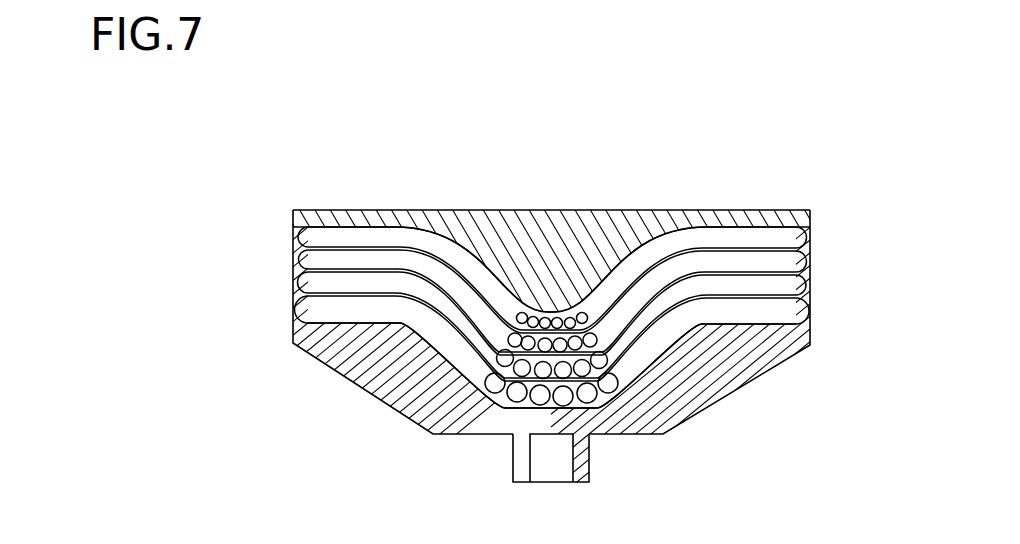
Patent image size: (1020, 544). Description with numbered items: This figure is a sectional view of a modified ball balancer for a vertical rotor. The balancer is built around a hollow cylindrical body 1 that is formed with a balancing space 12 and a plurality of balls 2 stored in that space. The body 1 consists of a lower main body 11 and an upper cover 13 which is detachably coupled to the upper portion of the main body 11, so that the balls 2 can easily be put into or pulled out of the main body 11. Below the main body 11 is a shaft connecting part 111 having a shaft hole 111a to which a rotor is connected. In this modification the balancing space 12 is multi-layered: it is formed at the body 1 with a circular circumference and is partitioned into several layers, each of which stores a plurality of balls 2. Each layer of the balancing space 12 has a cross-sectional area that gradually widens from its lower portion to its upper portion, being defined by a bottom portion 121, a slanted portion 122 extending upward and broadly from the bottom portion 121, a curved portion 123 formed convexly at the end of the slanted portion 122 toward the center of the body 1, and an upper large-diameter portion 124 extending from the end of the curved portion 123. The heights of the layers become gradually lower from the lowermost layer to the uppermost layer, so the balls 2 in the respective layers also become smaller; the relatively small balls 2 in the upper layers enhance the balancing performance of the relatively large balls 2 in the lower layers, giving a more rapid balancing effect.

The body 1 is at (510, 362).
The main body 11 is at (510, 364).
The shaft connecting part 111 is at (489, 467).
The shaft hole 111a is at (550, 460).
The upper cover 13 is at (541, 258).
The balancing space 12 is at (857, 408).
The bottom portion 121 is at (654, 359).
The slanted portion 122 is at (640, 368).
The curved portion 123 is at (662, 330).
The upper large-diameter portion 124 is at (790, 313).
The balls 2 is at (483, 378).